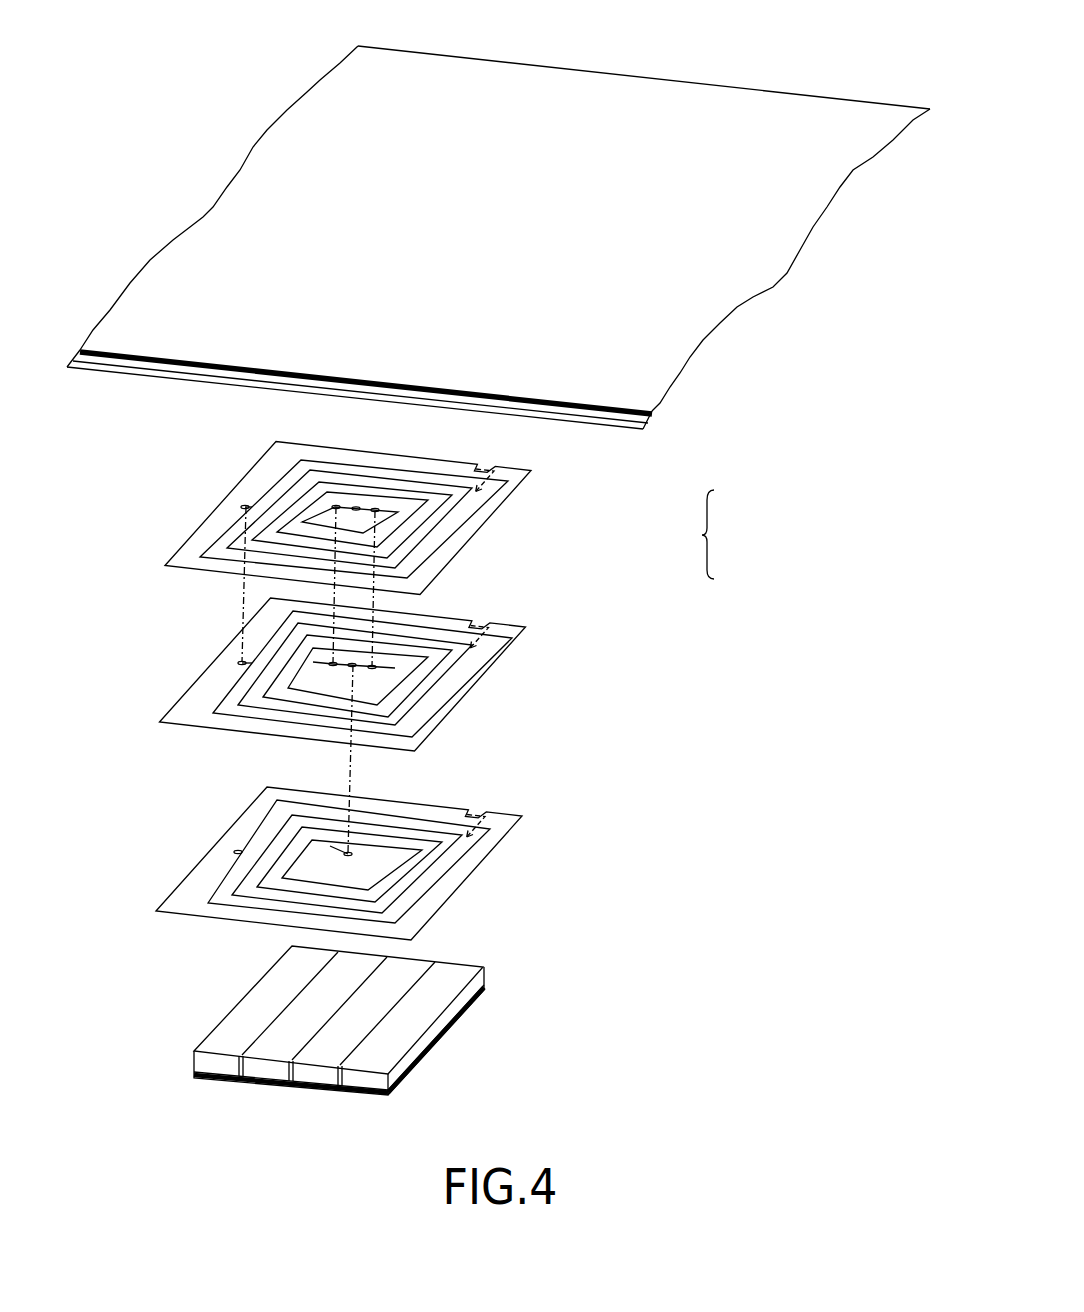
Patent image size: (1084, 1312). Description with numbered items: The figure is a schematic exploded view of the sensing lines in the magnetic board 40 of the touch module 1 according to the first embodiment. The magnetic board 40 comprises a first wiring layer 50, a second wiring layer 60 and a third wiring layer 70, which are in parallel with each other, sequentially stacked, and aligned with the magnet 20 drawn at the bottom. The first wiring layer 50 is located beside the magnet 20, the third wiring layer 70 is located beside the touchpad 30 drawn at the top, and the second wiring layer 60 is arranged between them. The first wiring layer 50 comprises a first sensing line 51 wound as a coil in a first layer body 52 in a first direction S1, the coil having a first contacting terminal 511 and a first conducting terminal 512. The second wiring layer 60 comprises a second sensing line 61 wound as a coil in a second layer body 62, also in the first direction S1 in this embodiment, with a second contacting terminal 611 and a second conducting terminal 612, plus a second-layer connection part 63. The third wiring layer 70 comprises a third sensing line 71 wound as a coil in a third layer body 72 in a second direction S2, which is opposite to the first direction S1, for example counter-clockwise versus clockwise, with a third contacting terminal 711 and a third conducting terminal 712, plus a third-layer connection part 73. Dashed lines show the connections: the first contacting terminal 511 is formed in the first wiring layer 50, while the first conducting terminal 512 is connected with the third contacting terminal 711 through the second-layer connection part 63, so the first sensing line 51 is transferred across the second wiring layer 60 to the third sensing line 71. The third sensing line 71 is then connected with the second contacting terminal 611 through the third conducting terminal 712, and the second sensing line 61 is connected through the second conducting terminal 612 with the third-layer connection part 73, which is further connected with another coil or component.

The wireless charging device 1 is at (754, 41).
The magnet 20 is at (253, 1003).
The touchpad 30 is at (213, 232).
The magnetic board 40 is at (708, 537).
The first wiring layer 50 is at (319, 858).
The first sensing line 51 is at (447, 870).
The first layer body 52 is at (475, 850).
The first contacting terminal 511 is at (237, 850).
The first conducting terminal 512 is at (350, 849).
The second wiring layer 60 is at (343, 710).
The second sensing line 61 is at (450, 680).
The second layer body 62 is at (478, 660).
The second-layer connection part 63 is at (355, 668).
The second contacting terminal 611 is at (242, 660).
The second conducting terminal 612 is at (316, 662).
The third wiring layer 70 is at (345, 505).
The third sensing line 71 is at (457, 525).
The third layer body 72 is at (483, 507).
The third-layer connection part 73 is at (343, 503).
The third contacting terminal 711 is at (377, 507).
The third conducting terminal 712 is at (247, 505).
The first direction S1 is at (493, 628).
The second direction S2 is at (497, 470).